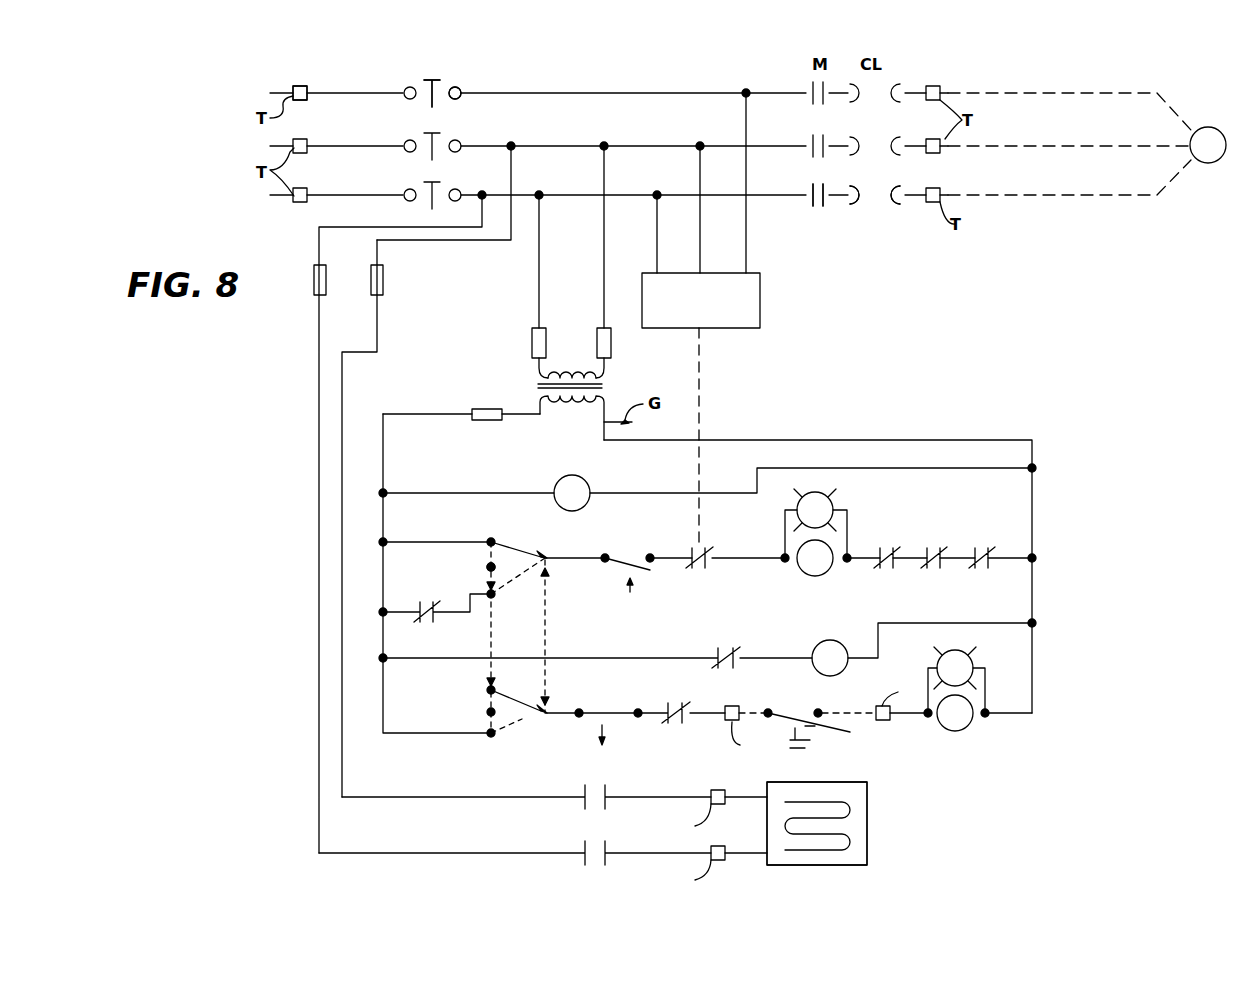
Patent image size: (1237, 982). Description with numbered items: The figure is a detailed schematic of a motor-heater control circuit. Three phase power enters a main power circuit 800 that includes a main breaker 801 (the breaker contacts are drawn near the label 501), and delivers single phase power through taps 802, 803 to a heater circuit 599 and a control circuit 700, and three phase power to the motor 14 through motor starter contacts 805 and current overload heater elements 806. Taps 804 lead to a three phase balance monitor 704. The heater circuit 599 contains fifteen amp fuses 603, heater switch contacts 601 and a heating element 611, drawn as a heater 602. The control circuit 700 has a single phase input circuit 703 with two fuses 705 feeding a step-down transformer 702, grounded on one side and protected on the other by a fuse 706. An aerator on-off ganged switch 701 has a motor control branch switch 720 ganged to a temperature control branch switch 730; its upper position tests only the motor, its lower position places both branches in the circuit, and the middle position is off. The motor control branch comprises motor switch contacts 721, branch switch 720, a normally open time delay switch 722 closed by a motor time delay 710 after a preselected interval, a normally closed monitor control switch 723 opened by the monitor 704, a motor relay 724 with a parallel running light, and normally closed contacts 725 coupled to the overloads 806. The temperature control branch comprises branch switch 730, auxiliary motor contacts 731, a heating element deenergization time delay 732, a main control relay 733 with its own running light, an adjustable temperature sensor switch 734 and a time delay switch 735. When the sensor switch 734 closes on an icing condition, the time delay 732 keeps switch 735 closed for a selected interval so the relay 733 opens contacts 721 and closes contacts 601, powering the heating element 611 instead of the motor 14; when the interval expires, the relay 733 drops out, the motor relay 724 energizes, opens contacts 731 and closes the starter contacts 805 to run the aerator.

The motor 14 is at (1208, 127).
The main power circuit 800 is at (266, 82).
The main disconnect switch 501 is at (423, 82).
The main breaker 801 is at (462, 84).
The tap 802 is at (506, 152).
The tap 803 is at (601, 149).
The taps 804 is at (744, 97).
The motor starter contacts 805 is at (818, 210).
The current overload heater elements 806 is at (885, 210).
The heater circuit 599 is at (300, 466).
The fuses 603 is at (370, 288).
The single phase input circuit 703 is at (530, 255).
The fuses 705 is at (596, 340).
The step-down transformer 702 is at (530, 387).
The three phase balance monitor 704 is at (750, 330).
The fuse 706 is at (478, 420).
The control circuit 700 is at (1040, 453).
The motor time delay 710 is at (588, 478).
The motor control branch switch 720 is at (515, 544).
The aerator on-off ganged switch 701 is at (440, 577).
The motor switch contacts 721 is at (425, 607).
The time delay switch 722 is at (637, 548).
The three phase monitor control switch 723 is at (708, 546).
The motor relay 724 is at (806, 574).
The contacts 725 is at (990, 545).
The auxiliary motor contacts 731 is at (712, 655).
The heating element deenergization time delay 732 is at (858, 612).
The temperature control branch switch 730 is at (520, 722).
The time delay switch 735 is at (638, 718).
The adjustable temperature sensor switch 734 is at (852, 733).
The main control relay 733 is at (962, 732).
The heater switch contacts 601 is at (580, 792).
The heater 602 is at (867, 855).
The heating element 611 is at (817, 823).